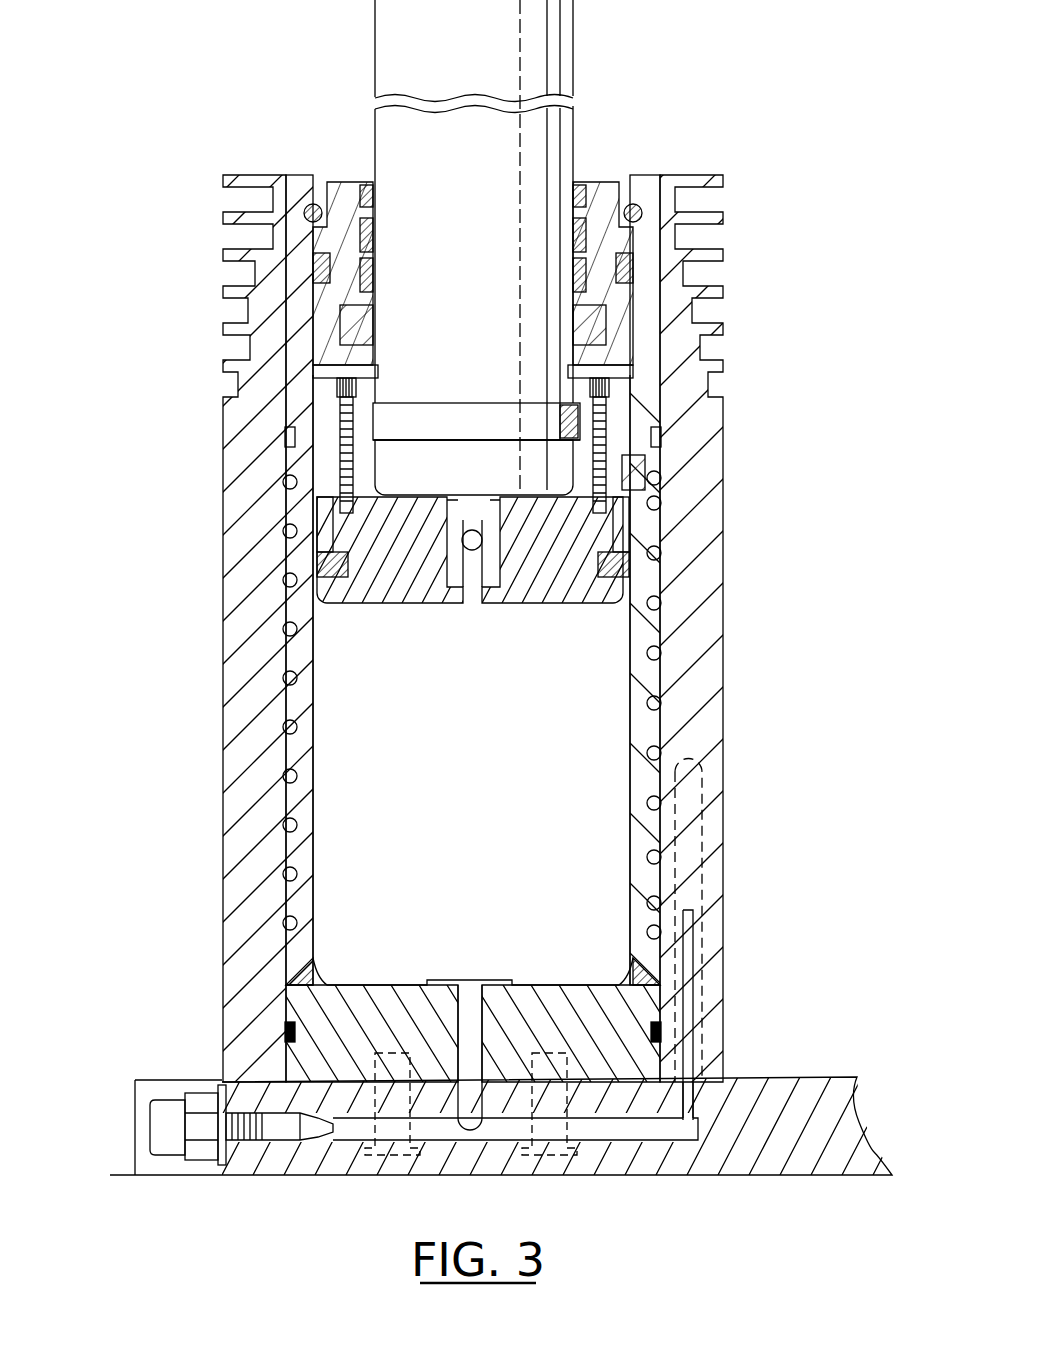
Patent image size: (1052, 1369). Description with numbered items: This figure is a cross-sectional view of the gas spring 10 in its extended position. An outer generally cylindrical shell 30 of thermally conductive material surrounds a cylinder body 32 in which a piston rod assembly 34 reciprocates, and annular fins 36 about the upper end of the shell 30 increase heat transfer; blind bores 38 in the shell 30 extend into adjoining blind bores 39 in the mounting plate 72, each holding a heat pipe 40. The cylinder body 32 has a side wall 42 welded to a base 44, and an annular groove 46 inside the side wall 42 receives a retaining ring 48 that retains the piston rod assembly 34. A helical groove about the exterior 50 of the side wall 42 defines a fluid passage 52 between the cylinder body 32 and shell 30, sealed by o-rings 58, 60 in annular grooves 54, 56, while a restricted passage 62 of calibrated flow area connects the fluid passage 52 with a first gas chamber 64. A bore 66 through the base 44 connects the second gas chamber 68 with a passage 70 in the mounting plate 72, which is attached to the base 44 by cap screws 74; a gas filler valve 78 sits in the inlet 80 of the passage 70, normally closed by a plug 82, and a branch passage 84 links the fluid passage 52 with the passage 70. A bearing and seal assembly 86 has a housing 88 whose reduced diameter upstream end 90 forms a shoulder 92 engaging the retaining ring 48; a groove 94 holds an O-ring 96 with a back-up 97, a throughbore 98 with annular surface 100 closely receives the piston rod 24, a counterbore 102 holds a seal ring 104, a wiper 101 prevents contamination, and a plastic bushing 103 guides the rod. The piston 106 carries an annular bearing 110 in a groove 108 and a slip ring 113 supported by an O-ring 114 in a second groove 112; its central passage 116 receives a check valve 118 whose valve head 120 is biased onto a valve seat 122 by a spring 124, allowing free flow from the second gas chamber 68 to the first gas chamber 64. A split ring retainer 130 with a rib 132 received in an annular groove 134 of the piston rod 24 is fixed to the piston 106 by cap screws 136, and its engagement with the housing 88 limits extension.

The gas spring 10 is at (786, 32).
The piston rod 24 is at (568, 66).
The outer generally cylindrical shell 30 is at (725, 620).
The cylinder body 32 is at (660, 745).
The piston rod assembly 34 is at (390, 640).
The annular fins 36 is at (725, 256).
The blind bores 38 is at (720, 808).
The blind bores 39 is at (700, 1085).
The heat pipe 40 is at (697, 800).
The side wall 42 is at (648, 718).
The base 44 is at (540, 985).
The annular groove 46 is at (638, 206).
The retaining ring 48 is at (631, 204).
The exterior 50 is at (660, 668).
The fluid passage 52 is at (618, 561).
The annular groove 54 is at (660, 437).
The annular groove 56 is at (661, 1028).
The o-ring 58 is at (660, 445).
The o-ring 60 is at (661, 1038).
The restricted passage 62 is at (642, 485).
The first gas chamber 64 is at (596, 355).
The bore 66 is at (470, 985).
The second gas chamber 68 is at (340, 795).
The passage 70 is at (650, 1142).
The mounting plate 72 is at (760, 1170).
The cap screws 74 is at (385, 1156).
The gas filler valve 78 is at (300, 1144).
The inlet 80 is at (205, 1110).
The plug 82 is at (150, 1115).
The branch passage 84 is at (691, 960).
The bearing and seal assembly 86 is at (345, 180).
The housing 88 is at (318, 318).
The reduced diameter upstream end 90 is at (311, 204).
The shoulder 92 is at (313, 258).
The groove 94 is at (316, 268).
The O-ring 96 is at (322, 278).
The back-up 97 is at (622, 262).
The throughbore 98 is at (497, 306).
The annular surface 100 is at (375, 300).
The wiper 101 is at (368, 190).
The counterbore 102 is at (378, 313).
The annular plastic bushing 103 is at (373, 236).
The seal ring 104 is at (380, 331).
The piston 106 is at (556, 598).
The groove 108 is at (630, 508).
The annular bearing 110 is at (634, 526).
The second groove 112 is at (318, 520).
The slip ring 113 is at (325, 575).
The O-ring 114 is at (320, 565).
The central passage 116 is at (491, 510).
The valve 118 is at (470, 600).
The valve head 120 is at (473, 528).
The valve seat 122 is at (452, 512).
The spring 124 is at (450, 507).
The split ring retainer 130 is at (338, 466).
The rib 132 is at (405, 394).
The annular groove 134 is at (457, 406).
The cap screws 136 is at (332, 400).